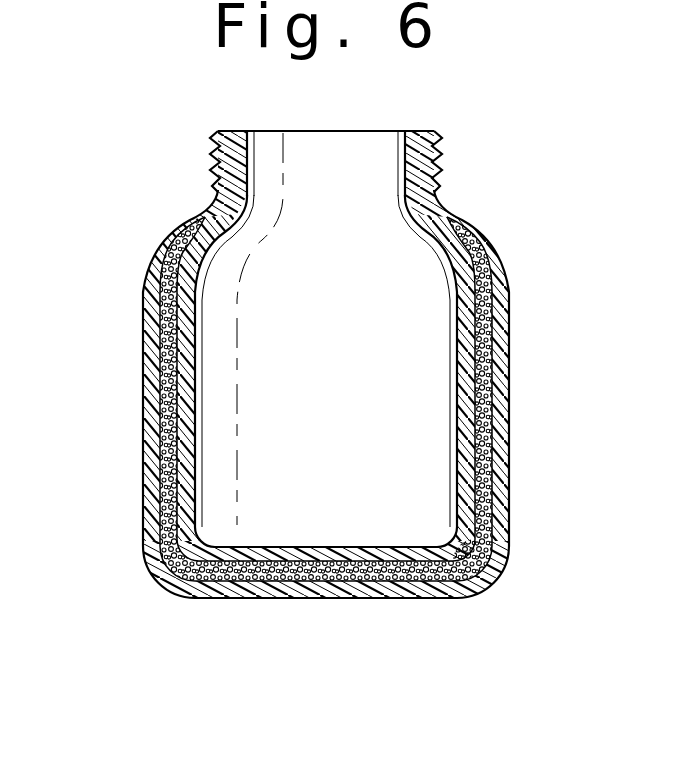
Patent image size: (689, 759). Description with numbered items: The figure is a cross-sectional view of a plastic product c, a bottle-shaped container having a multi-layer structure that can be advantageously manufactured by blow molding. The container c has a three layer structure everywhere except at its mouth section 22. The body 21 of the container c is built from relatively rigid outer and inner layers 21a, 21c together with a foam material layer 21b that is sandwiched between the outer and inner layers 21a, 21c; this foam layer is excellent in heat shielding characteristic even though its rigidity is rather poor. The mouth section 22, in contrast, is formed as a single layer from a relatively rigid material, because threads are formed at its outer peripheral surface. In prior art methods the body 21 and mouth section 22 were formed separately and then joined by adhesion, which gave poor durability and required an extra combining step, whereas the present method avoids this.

The plastic product C is at (166, 182).
The body 21 is at (128, 406).
The outer layer 21a is at (163, 330).
The foam material layer 21b is at (153, 260).
The inner layer 21c is at (184, 282).
The mouth section 22 is at (485, 206).